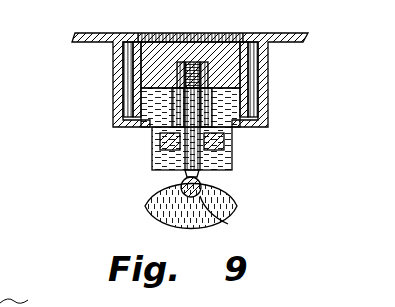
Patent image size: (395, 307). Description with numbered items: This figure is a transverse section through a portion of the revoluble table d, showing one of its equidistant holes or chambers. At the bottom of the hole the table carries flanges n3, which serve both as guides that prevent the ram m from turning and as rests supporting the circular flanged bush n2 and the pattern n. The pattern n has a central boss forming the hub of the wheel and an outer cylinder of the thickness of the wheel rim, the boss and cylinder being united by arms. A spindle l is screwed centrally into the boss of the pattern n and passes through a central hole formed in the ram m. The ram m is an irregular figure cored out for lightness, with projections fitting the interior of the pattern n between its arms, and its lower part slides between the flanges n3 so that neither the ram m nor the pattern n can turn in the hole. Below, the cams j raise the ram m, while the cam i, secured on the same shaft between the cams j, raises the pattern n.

The revoluble table d is at (273, 47).
The pattern n is at (190, 65).
The circular flanged bush n2 is at (247, 78).
The flanges n3 is at (232, 123).
The ram m is at (153, 130).
The spindle l is at (180, 147).
The cam i is at (204, 200).
The cams j is at (191, 206).